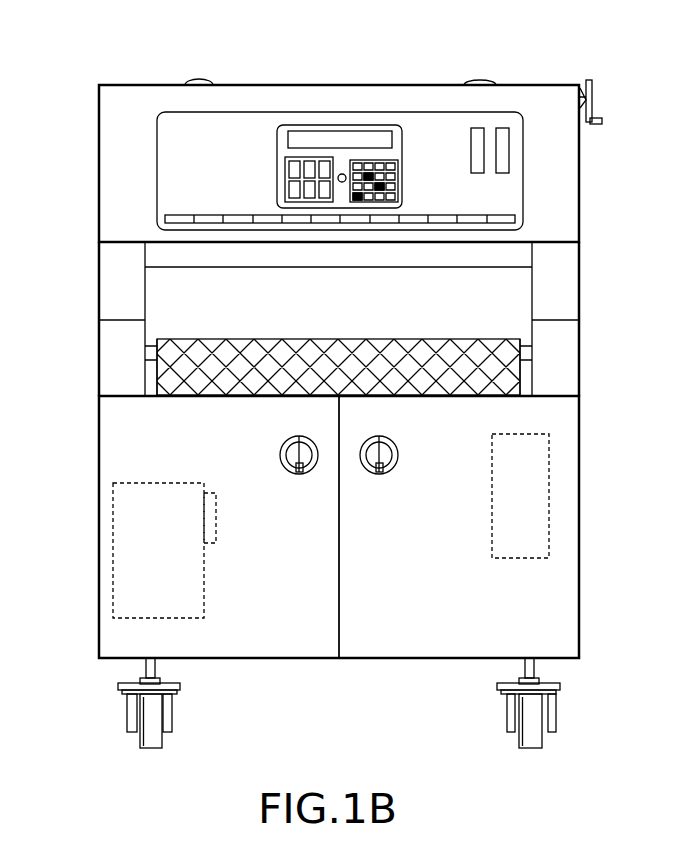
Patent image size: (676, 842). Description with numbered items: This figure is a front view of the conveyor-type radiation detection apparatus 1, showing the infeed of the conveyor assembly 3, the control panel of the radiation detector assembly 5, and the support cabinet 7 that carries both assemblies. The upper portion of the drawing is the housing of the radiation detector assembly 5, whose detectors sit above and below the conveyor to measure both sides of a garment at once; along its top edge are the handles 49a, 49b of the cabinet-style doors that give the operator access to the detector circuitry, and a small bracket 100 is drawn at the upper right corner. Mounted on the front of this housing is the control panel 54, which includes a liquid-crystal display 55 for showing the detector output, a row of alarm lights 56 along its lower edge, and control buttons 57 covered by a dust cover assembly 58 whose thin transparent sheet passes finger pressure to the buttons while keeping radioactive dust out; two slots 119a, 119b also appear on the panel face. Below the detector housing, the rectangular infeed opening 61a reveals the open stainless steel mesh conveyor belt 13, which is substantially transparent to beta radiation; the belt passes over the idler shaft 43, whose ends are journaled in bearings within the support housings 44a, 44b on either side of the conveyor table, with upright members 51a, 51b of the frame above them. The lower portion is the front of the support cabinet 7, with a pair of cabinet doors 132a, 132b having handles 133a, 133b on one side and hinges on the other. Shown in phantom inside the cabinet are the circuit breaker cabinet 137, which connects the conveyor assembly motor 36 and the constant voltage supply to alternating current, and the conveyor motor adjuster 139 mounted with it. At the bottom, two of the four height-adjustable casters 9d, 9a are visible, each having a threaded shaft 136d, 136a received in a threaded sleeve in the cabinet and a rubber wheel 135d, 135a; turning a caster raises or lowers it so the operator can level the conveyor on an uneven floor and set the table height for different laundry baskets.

The conveyor-type radiation detection apparatus 1 is at (86, 48).
The radiation detector assembly 5 is at (586, 200).
The conveyor assembly 3 is at (586, 322).
The support cabinet 7 is at (586, 459).
The handle 49a is at (192, 72).
The handle 49b is at (478, 78).
The side bracket 100 is at (592, 80).
The control panel 54 is at (203, 145).
The liquid-crystal display 55 is at (323, 137).
The row of alarm lights 56 is at (216, 221).
The control buttons 57 is at (295, 183).
The dust cover assembly 58 is at (380, 183).
The slot 119a is at (472, 145).
The slot 119b is at (503, 143).
The left upper pillar 51a is at (110, 294).
The right upper pillar 51b is at (567, 294).
The support housing 44a is at (112, 357).
The support housing 44b is at (567, 357).
The idler shaft 43 is at (528, 346).
The infeed opening 61a is at (272, 330).
The conveyor belt 13 is at (345, 358).
The cabinet door 132a is at (232, 446).
The cabinet door 132b is at (448, 446).
The handle 133a is at (304, 472).
The handle 133b is at (386, 472).
The circuit breaker cabinet 137 is at (170, 568).
The conveyor motor adjuster 139 is at (212, 518).
The conveyor assembly motor 36 is at (530, 511).
The height-adjustable caster 9d is at (122, 712).
The height-adjustable caster 9a is at (560, 713).
The threaded shaft 136d is at (147, 666).
The threaded shaft 136a is at (534, 665).
The rubber wheel 135d is at (152, 733).
The rubber wheel 135a is at (528, 733).